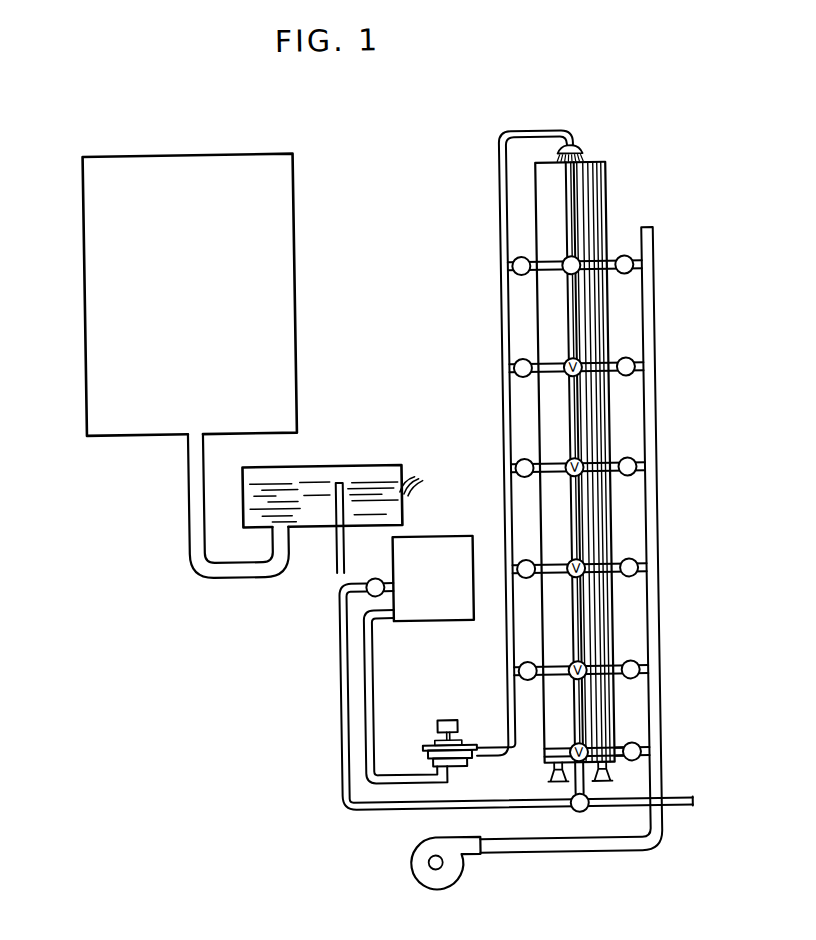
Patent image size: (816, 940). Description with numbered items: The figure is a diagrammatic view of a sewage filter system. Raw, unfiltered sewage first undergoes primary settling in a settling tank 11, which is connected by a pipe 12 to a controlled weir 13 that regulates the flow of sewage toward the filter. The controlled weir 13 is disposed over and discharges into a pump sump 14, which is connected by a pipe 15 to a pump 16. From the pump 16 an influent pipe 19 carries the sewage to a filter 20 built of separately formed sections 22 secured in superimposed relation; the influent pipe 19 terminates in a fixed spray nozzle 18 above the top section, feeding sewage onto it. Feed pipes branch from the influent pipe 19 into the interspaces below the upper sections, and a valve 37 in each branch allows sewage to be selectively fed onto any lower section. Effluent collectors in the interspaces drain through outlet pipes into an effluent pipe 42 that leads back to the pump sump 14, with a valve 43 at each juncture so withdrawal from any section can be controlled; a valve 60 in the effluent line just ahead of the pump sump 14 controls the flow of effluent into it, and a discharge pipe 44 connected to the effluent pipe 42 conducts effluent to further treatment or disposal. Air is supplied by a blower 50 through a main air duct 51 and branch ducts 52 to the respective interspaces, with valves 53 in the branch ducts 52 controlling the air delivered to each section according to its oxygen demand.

The settling tank 11 is at (88, 289).
The pipe 12 is at (189, 483).
The controlled weir 13 is at (405, 480).
The pump sump 14 is at (439, 538).
The pipe 15 is at (362, 680).
The pump 16 is at (456, 744).
The spray nozzle 18 is at (584, 151).
The influent pipe 19 is at (504, 405).
The filter 20 is at (611, 202).
The section 22 is at (550, 302).
The valve 37 is at (519, 262).
The effluent pipe 42 is at (581, 417).
The valve 43 is at (582, 262).
The discharge pipe 44 is at (668, 809).
The blower 50 is at (442, 877).
The main air duct 51 is at (574, 855).
The branch duct 52 is at (613, 751).
The valve 53 is at (636, 262).
The valve 60 is at (363, 584).